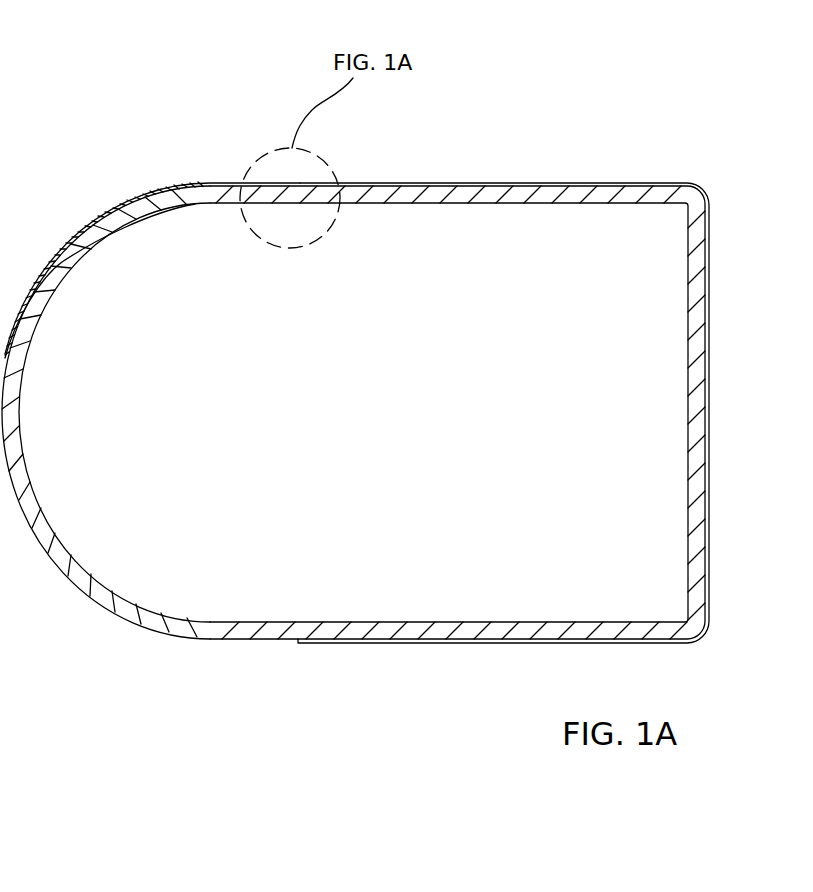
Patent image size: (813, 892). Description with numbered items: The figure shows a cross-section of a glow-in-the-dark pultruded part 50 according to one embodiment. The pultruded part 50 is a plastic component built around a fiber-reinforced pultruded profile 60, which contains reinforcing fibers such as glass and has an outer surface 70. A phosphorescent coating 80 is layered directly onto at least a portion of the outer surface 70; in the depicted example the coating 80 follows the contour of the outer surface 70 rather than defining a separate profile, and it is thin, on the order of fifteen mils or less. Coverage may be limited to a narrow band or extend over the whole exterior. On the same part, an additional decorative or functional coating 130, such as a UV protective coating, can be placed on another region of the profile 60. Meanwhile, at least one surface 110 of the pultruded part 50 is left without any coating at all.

The glow-in-the-dark pultruded part 50 is at (585, 147).
The fiber-reinforced pultruded profile 60 is at (673, 192).
The outer surface 70 is at (212, 640).
The phosphorescent coating 80 is at (381, 184).
The surface without any coatings 110 is at (62, 572).
The additional decorative or functional coating 130 is at (140, 190).